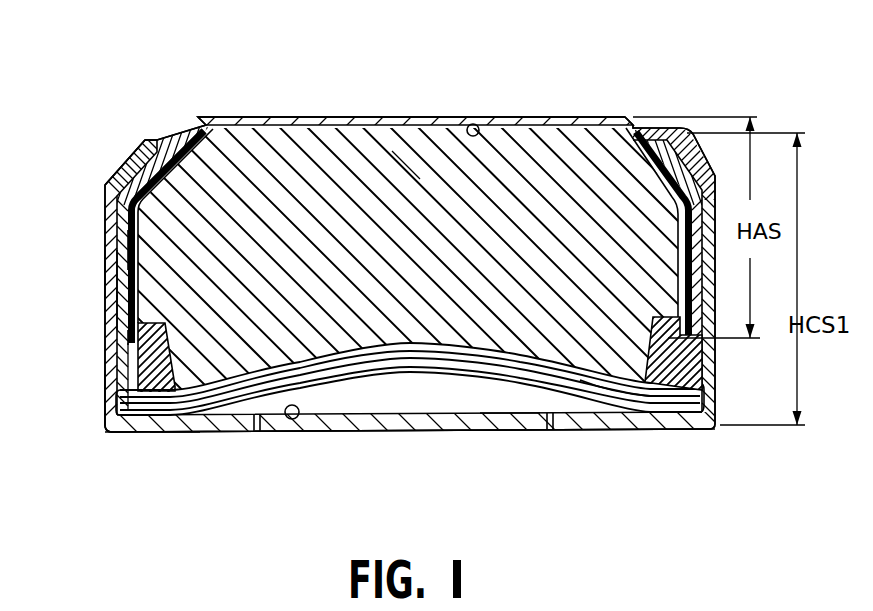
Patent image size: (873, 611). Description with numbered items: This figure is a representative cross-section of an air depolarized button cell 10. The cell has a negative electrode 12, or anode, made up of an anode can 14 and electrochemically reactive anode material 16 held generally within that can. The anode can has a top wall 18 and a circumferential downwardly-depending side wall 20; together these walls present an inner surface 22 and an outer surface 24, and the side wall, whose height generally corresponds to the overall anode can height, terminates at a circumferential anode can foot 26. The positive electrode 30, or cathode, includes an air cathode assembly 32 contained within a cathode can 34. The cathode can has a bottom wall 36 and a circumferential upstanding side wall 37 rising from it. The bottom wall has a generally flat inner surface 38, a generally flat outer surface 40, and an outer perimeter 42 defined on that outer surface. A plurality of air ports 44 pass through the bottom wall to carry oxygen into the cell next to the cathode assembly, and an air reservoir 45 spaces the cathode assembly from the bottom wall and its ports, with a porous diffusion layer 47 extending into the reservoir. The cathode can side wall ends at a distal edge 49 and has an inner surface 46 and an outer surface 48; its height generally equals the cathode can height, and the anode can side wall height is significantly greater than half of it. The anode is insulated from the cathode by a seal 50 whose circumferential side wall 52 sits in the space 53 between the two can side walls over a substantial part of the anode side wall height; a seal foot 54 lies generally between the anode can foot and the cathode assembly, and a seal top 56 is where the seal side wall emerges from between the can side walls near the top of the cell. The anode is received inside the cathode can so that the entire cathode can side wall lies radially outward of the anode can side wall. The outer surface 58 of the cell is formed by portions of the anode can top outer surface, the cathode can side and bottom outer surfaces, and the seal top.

The air depolarized button cell 10 is at (524, 90).
The negative electrode 12 is at (382, 164).
The anode can 14 is at (340, 106).
The anode material 16 is at (407, 173).
The top wall 18 is at (296, 117).
The side wall 20 is at (115, 230).
The inner surface 22 is at (475, 124).
The outer surface 24 is at (553, 117).
The anode can foot 26 is at (116, 341).
The positive electrode 30 is at (221, 446).
The air cathode assembly 32 is at (403, 385).
The cathode can 34 is at (429, 446).
The bottom wall 36 is at (489, 446).
The side wall 37 is at (90, 389).
The inner surface 38 is at (292, 432).
The outer surface 40 is at (345, 432).
The outer perimeter 42 is at (127, 435).
The air ports 44 is at (557, 431).
The air reservoir 45 is at (507, 400).
The inner surface 46 is at (123, 210).
The porous diffusion layer 47 is at (600, 397).
The outer surface 48 is at (110, 263).
The distal edge 49 is at (152, 138).
The seal 50 is at (132, 162).
The side wall 52 is at (110, 248).
The space 53 is at (112, 307).
The seal foot 54 is at (128, 383).
The seal top 56 is at (179, 130).
The outer surface 58 is at (161, 444).